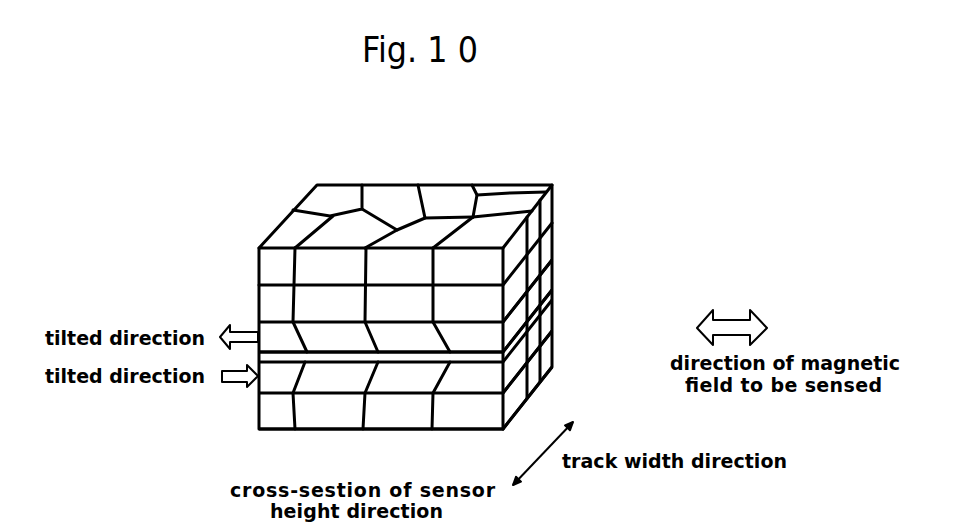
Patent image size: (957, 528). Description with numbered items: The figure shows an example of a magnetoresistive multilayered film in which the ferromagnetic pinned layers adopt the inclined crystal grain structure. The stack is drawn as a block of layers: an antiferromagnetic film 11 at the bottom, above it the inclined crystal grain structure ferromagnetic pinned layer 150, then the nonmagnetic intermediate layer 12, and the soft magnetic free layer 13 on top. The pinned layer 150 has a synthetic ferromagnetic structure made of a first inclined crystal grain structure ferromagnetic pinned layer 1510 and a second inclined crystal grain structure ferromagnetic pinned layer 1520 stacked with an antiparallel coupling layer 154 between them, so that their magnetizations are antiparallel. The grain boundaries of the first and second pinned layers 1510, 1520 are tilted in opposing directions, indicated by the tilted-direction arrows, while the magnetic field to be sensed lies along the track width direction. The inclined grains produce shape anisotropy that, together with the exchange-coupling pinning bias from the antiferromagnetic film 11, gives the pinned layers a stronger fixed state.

The antiferromagnetic film 11 is at (553, 378).
The nonmagnetic intermediate layer 12 is at (553, 247).
The soft magnetic free layer 13 is at (553, 203).
The inclined crystal grain structure ferromagnetic pinned layer 150 is at (553, 300).
The first inclined crystal grain structure ferromagnetic pinned layer 1510 is at (548, 299).
The antiparallel coupling layer 154 is at (553, 333).
The second inclined crystal grain structure ferromagnetic pinned layer 1520 is at (553, 365).